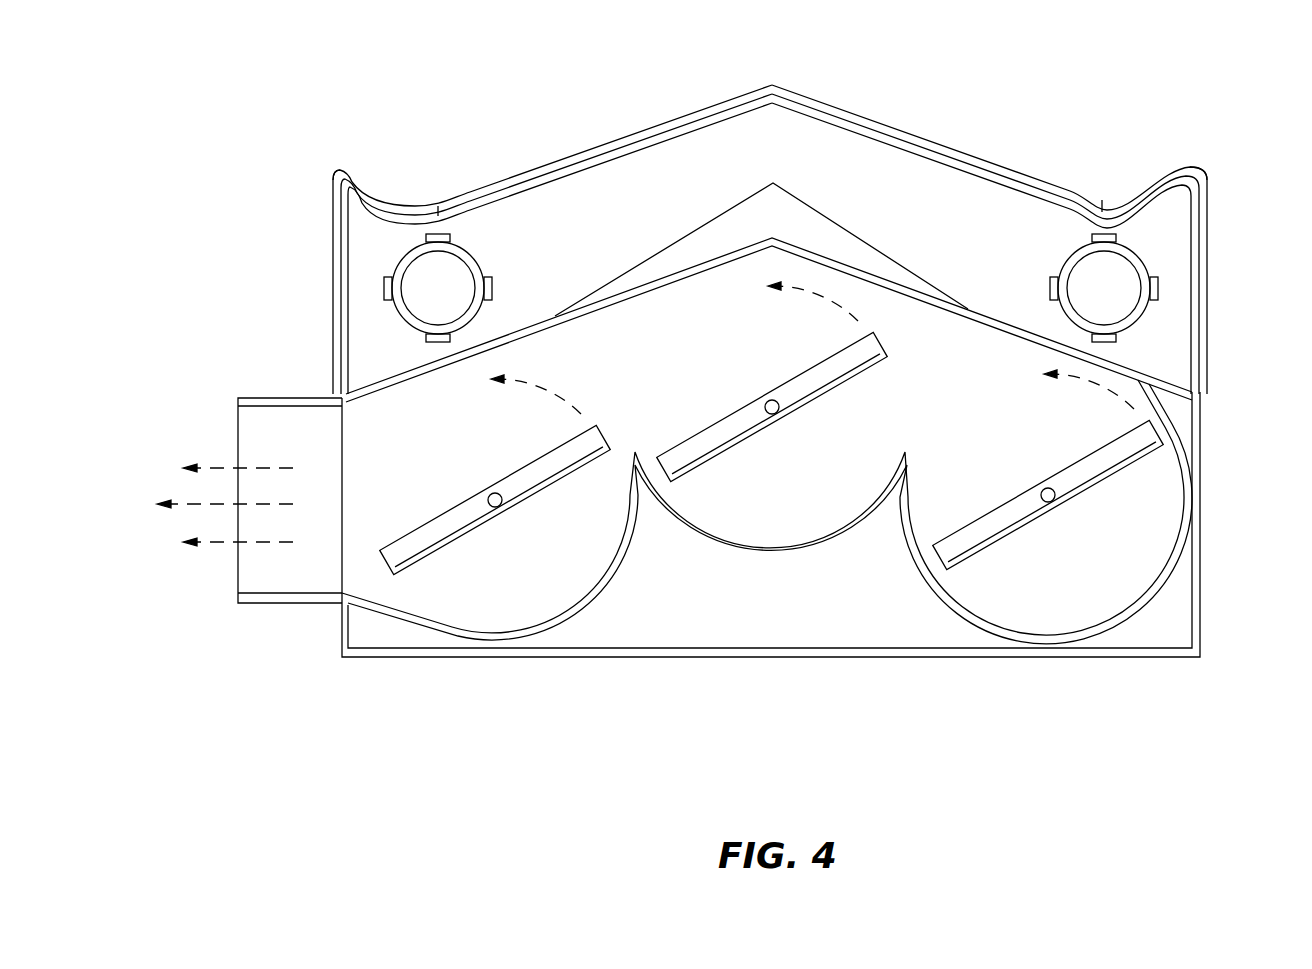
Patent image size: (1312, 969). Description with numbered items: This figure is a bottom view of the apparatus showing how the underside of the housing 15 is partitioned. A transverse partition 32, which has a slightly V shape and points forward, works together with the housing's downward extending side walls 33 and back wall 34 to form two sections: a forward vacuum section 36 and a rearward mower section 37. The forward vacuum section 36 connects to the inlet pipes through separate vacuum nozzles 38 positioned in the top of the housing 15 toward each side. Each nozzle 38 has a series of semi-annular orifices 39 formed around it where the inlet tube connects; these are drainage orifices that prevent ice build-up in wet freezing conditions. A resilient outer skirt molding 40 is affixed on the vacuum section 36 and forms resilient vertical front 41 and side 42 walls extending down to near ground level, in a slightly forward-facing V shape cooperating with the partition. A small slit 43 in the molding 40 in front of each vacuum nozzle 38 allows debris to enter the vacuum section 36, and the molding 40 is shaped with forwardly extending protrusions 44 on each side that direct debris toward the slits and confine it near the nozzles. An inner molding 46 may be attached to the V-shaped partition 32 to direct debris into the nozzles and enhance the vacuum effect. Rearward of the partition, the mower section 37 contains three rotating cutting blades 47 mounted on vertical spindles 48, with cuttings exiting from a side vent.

The housing 15 is at (1210, 473).
The transverse partition 32 is at (681, 280).
The side walls 33 is at (340, 637).
The back wall 34 is at (767, 648).
The forward vacuum section 36 is at (903, 192).
The mower section 37 is at (928, 372).
The vacuum nozzle 38 is at (400, 262).
The semi-annular orifices 39 is at (493, 290).
The resilient outer skirt molding 40 is at (565, 150).
The front wall 41 is at (695, 112).
The side walls 42 is at (333, 302).
The slit 43 is at (438, 205).
The forwardly extending protrusions 44 is at (345, 165).
The inner molding 46 is at (750, 213).
The rotating cutting blades 47 is at (425, 540).
The vertical spindles 48 is at (499, 507).